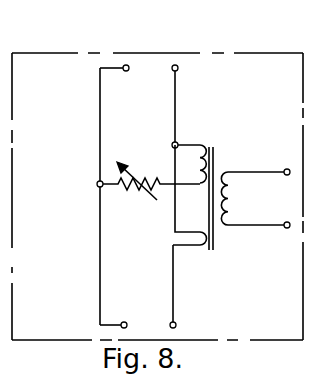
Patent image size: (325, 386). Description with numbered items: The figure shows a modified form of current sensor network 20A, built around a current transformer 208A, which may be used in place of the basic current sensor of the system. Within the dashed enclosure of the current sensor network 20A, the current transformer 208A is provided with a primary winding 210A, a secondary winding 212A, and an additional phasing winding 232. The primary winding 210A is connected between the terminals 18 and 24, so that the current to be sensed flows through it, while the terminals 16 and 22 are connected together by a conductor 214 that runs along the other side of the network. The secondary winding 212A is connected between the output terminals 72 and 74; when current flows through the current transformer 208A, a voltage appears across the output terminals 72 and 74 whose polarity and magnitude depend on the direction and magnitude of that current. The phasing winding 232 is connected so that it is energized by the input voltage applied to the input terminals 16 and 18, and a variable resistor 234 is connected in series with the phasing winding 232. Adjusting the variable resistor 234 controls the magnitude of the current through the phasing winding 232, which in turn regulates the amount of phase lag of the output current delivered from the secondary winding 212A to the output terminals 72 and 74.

The current sensor network 20A is at (128, 52).
The input terminal 16 is at (128, 70).
The input terminal 18 is at (177, 70).
The terminal 22 is at (126, 323).
The terminal 24 is at (175, 323).
The conductor 214 is at (99, 221).
The phasing winding 232 is at (200, 161).
The variable resistor 234 is at (126, 193).
The primary winding 210A is at (172, 232).
The current transformer 208A is at (215, 152).
The secondary winding 212A is at (223, 204).
The output terminal 74 is at (287, 169).
The output terminal 72 is at (287, 229).